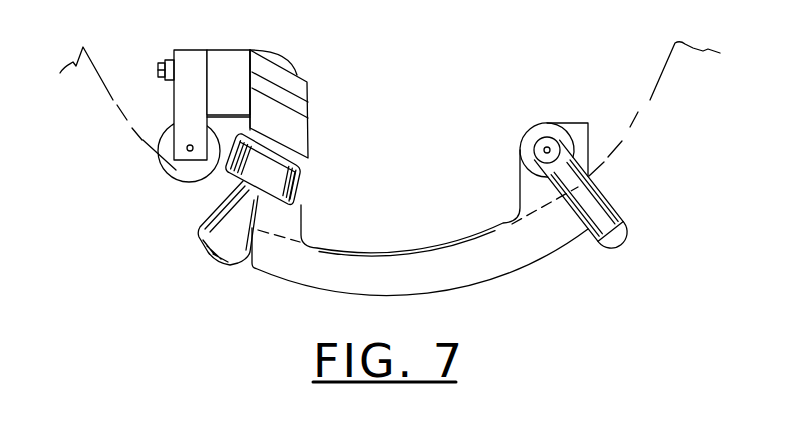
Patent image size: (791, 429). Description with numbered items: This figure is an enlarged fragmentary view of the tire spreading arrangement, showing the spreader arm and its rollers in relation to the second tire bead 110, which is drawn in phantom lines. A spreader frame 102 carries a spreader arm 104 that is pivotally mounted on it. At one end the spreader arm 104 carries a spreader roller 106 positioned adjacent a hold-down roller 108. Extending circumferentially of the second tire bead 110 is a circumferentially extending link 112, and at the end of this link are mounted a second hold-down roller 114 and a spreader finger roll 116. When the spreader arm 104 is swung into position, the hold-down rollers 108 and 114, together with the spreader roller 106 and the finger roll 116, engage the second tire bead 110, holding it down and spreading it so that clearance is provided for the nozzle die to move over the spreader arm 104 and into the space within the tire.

The spreader frame 102 is at (230, 62).
The spreader arm 104 is at (285, 220).
The spreader roller 106 is at (198, 233).
The hold-down roller 108 is at (160, 157).
The second tire bead 110 is at (653, 93).
The circumferentially extending link 112 is at (525, 255).
The hold-down roller 114 is at (548, 132).
The spreader finger roll 116 is at (617, 212).